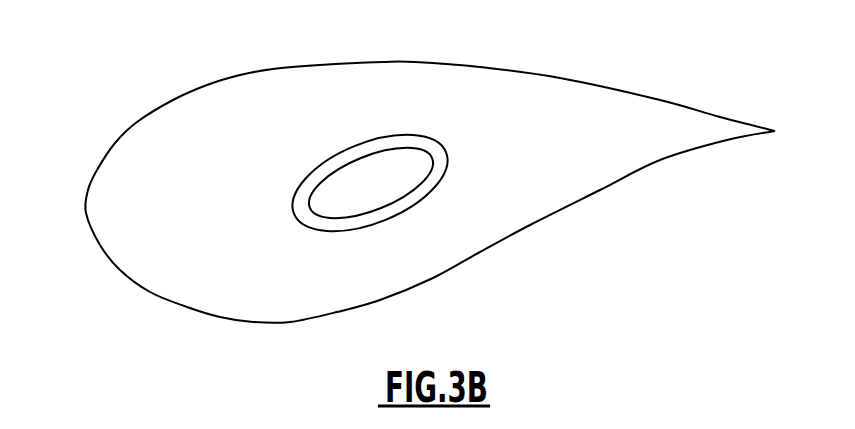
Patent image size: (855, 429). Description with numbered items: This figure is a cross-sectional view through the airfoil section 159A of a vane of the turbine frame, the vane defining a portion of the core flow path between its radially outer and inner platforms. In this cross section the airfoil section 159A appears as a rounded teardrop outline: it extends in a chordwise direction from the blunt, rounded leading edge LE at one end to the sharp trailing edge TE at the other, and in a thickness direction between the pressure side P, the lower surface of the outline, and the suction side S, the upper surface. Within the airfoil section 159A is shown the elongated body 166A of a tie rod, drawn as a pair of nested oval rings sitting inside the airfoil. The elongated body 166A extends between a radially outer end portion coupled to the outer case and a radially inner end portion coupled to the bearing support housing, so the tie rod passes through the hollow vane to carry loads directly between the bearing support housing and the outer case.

The airfoil section 159A is at (420, 168).
The elongated body 166A is at (432, 163).
The suction side S is at (415, 62).
The pressure side P is at (433, 278).
The leading edge LE is at (86, 215).
The trailing edge TE is at (773, 129).